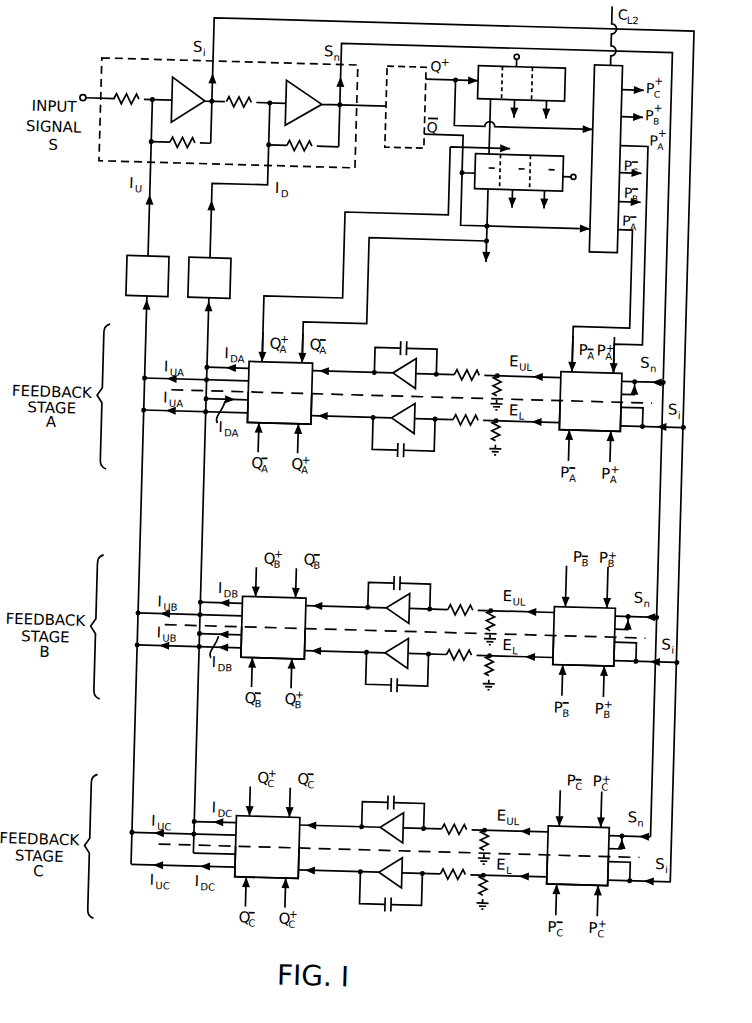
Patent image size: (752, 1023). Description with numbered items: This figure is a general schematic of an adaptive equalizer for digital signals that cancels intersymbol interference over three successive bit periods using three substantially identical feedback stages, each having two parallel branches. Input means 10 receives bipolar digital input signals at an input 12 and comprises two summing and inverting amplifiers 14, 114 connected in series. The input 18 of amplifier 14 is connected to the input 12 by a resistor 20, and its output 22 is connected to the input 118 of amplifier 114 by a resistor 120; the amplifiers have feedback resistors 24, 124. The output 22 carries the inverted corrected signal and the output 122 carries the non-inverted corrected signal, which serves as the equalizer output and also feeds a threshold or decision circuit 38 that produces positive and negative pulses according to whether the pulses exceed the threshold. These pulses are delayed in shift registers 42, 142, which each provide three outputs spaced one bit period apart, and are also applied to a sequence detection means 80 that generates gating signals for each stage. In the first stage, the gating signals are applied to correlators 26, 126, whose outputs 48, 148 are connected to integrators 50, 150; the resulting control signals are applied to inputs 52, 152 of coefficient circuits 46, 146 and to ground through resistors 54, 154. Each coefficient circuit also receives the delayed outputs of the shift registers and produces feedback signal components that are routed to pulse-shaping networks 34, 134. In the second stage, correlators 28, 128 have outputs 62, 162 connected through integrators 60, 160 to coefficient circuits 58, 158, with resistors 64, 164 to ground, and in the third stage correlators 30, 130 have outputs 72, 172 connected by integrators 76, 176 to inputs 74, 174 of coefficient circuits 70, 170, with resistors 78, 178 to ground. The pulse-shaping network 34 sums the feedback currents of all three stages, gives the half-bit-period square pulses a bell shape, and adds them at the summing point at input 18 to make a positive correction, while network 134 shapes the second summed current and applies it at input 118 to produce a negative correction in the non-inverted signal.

The input means 10 is at (125, 66).
The input 12 is at (72, 103).
The summing and inverting amplifier 14 is at (185, 92).
The input of amplifier 14 18 is at (142, 103).
The resistor 20 is at (123, 99).
The output of amplifier 14 22 is at (202, 120).
The feedback resistor 24 is at (170, 146).
The correlator 26 is at (590, 402).
The correlator 28 is at (584, 637).
The correlator 30 is at (578, 856).
The pulse-shaping network 34 is at (131, 292).
The threshold or decision circuit 38 is at (385, 108).
The shift register 42 is at (468, 63).
The coefficient circuit 46 is at (279, 392).
The output of correlator 26 48 is at (575, 354).
The integrator 50 is at (427, 355).
The input of coefficient circuit 46 52 is at (352, 379).
The resistor 54 is at (357, 361).
The coefficient circuit 58 is at (273, 627).
The integrator 60 is at (417, 593).
The output of correlator 28 62 is at (568, 586).
The resistor 64 is at (501, 626).
The coefficient circuit 70 is at (267, 847).
The output of correlator 30 72 is at (562, 808).
The input of coefficient circuit 70 74 is at (340, 812).
The integrator 76 is at (411, 813).
The resistor 78 is at (495, 845).
The sequence detection means 80 is at (587, 180).
The summing and inverting amplifier 114 is at (292, 96).
The input of amplifier 114 118 is at (258, 148).
The resistor 120 is at (228, 100).
The output of amplifier 114 122 is at (329, 125).
The feedback resistor 124 is at (294, 146).
The correlator 126 is at (590, 416).
The correlator 128 is at (584, 651).
The correlator 130 is at (578, 870).
The pulse-shaping network 134 is at (190, 292).
The shift register 142 is at (466, 178).
The coefficient circuit 146 is at (279, 408).
The output of correlator 126 148 is at (568, 445).
The integrator 150 is at (424, 436).
The input of coefficient circuit 146 152 is at (350, 430).
The resistor 154 is at (388, 392).
The coefficient circuit 158 is at (273, 643).
The integrator 160 is at (413, 673).
The output of correlator 128 162 is at (562, 679).
The resistor 164 is at (499, 680).
The coefficient circuit 170 is at (267, 862).
The output of correlator 130 172 is at (556, 899).
The input of coefficient circuit 170 174 is at (338, 887).
The integrator 176 is at (406, 893).
The resistor 178 is at (493, 899).